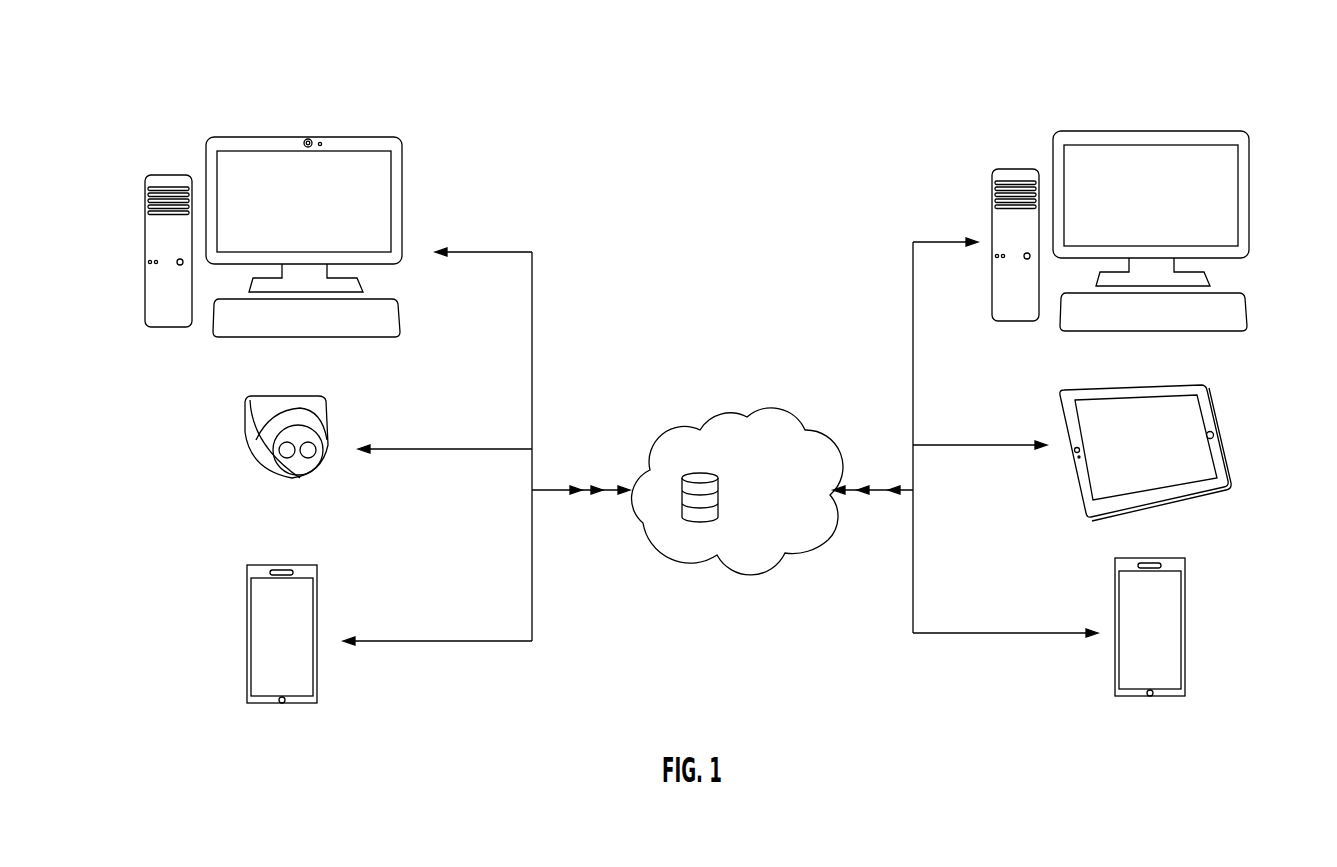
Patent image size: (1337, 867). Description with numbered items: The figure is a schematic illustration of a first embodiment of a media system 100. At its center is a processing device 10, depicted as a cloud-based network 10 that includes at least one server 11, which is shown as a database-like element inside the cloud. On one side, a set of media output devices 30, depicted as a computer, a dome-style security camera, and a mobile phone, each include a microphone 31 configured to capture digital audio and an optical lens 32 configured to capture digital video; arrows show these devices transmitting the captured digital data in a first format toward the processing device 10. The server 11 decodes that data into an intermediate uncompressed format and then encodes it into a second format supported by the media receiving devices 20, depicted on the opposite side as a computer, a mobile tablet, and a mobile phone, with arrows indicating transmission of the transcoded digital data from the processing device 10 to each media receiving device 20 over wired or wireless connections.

The media system 100 is at (930, 105).
The processing device 10 is at (770, 481).
The server 11 is at (692, 474).
The media receiving device 20 is at (1258, 205).
The media output device 30 is at (190, 150).
The microphone 31 is at (322, 142).
The optical lens 32 is at (305, 139).